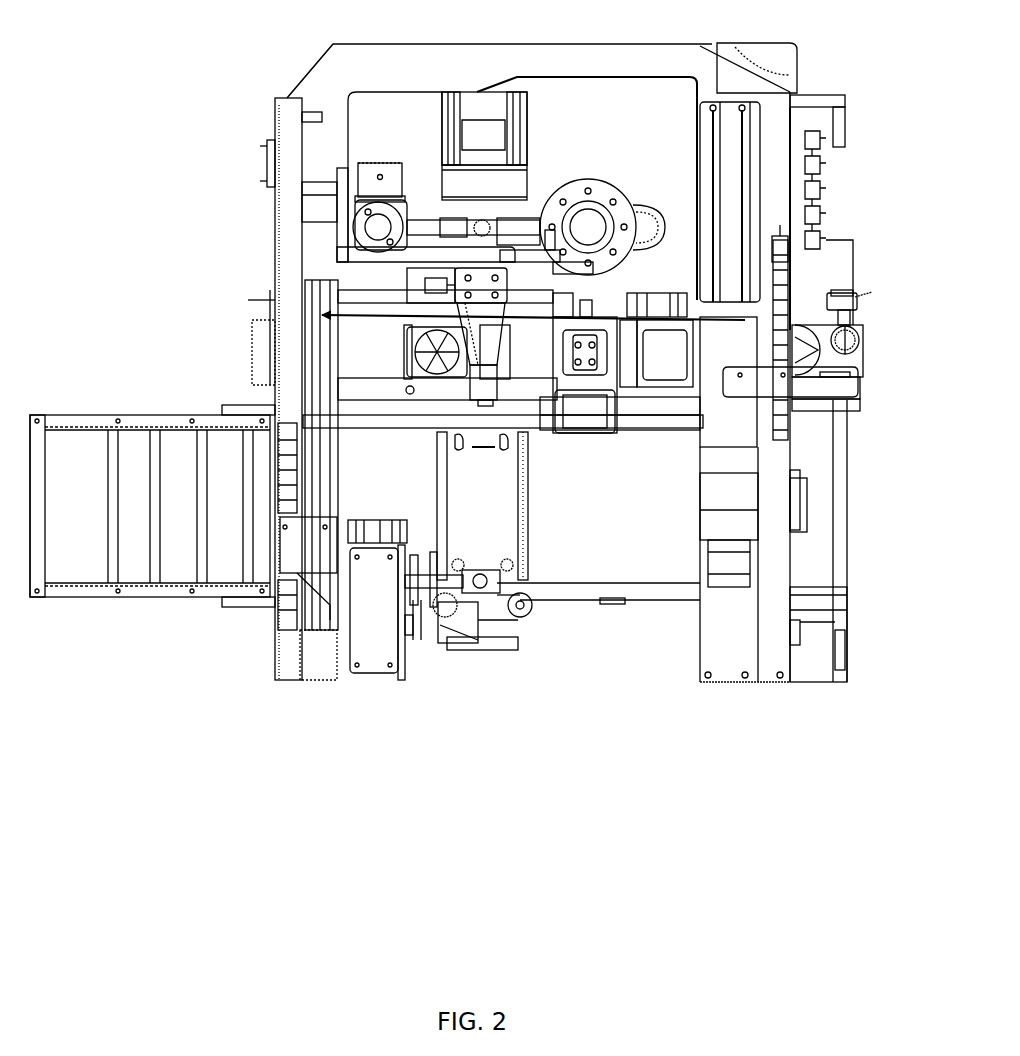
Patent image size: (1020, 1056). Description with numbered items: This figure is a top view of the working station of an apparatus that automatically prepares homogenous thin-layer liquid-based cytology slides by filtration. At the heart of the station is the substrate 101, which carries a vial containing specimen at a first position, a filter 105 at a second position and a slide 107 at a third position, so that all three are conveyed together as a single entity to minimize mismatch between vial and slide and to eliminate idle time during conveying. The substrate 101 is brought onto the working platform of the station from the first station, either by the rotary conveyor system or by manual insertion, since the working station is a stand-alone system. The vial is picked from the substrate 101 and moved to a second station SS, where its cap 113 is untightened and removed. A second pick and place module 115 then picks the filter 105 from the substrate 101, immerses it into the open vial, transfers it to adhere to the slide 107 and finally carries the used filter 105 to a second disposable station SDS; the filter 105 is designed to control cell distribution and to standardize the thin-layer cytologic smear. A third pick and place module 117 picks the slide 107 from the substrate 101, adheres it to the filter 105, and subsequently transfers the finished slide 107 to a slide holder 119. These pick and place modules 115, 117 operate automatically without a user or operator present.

The second disposable station SDS is at (356, 213).
The second station SS is at (622, 223).
The substrate 101 is at (868, 352).
The filter 105 is at (858, 334).
The slide 107 is at (861, 374).
The cap 113 is at (410, 357).
The second pick and place module 115 is at (614, 361).
The third pick and place module 117 is at (465, 315).
The slide holder 119 is at (533, 526).